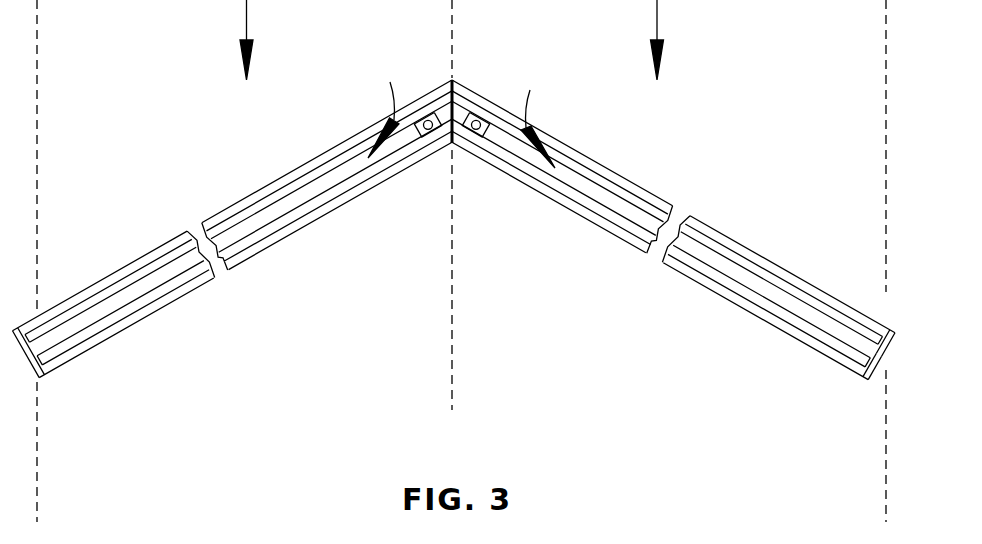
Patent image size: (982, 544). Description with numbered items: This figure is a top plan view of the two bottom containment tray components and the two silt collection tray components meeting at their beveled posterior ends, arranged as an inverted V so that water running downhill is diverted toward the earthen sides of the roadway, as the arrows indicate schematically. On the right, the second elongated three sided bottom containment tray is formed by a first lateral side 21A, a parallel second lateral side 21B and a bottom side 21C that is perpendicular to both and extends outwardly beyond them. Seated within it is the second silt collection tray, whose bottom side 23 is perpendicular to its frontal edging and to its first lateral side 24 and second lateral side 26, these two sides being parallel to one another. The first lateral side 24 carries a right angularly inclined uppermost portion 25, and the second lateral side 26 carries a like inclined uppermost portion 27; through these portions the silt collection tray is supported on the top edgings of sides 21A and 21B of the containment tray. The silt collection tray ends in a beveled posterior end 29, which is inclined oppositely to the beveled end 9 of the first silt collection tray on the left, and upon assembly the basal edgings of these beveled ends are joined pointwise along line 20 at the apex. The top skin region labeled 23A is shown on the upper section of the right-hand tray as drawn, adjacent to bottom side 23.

The beveled posterior end 9 is at (447, 90).
The line 20 is at (455, 83).
The beveled posterior end 29 is at (472, 100).
The upper panel section 23A is at (641, 215).
The right angularly inclined uppermost portion 27 is at (632, 246).
The bottom side 23 is at (724, 231).
The first lateral side 24 is at (753, 263).
The right angularly inclined uppermost portion 25 is at (792, 279).
The second lateral side 26 is at (740, 304).
The first lateral side 21A is at (878, 330).
The second lateral side 21B is at (862, 372).
The bottom side 21C is at (880, 356).